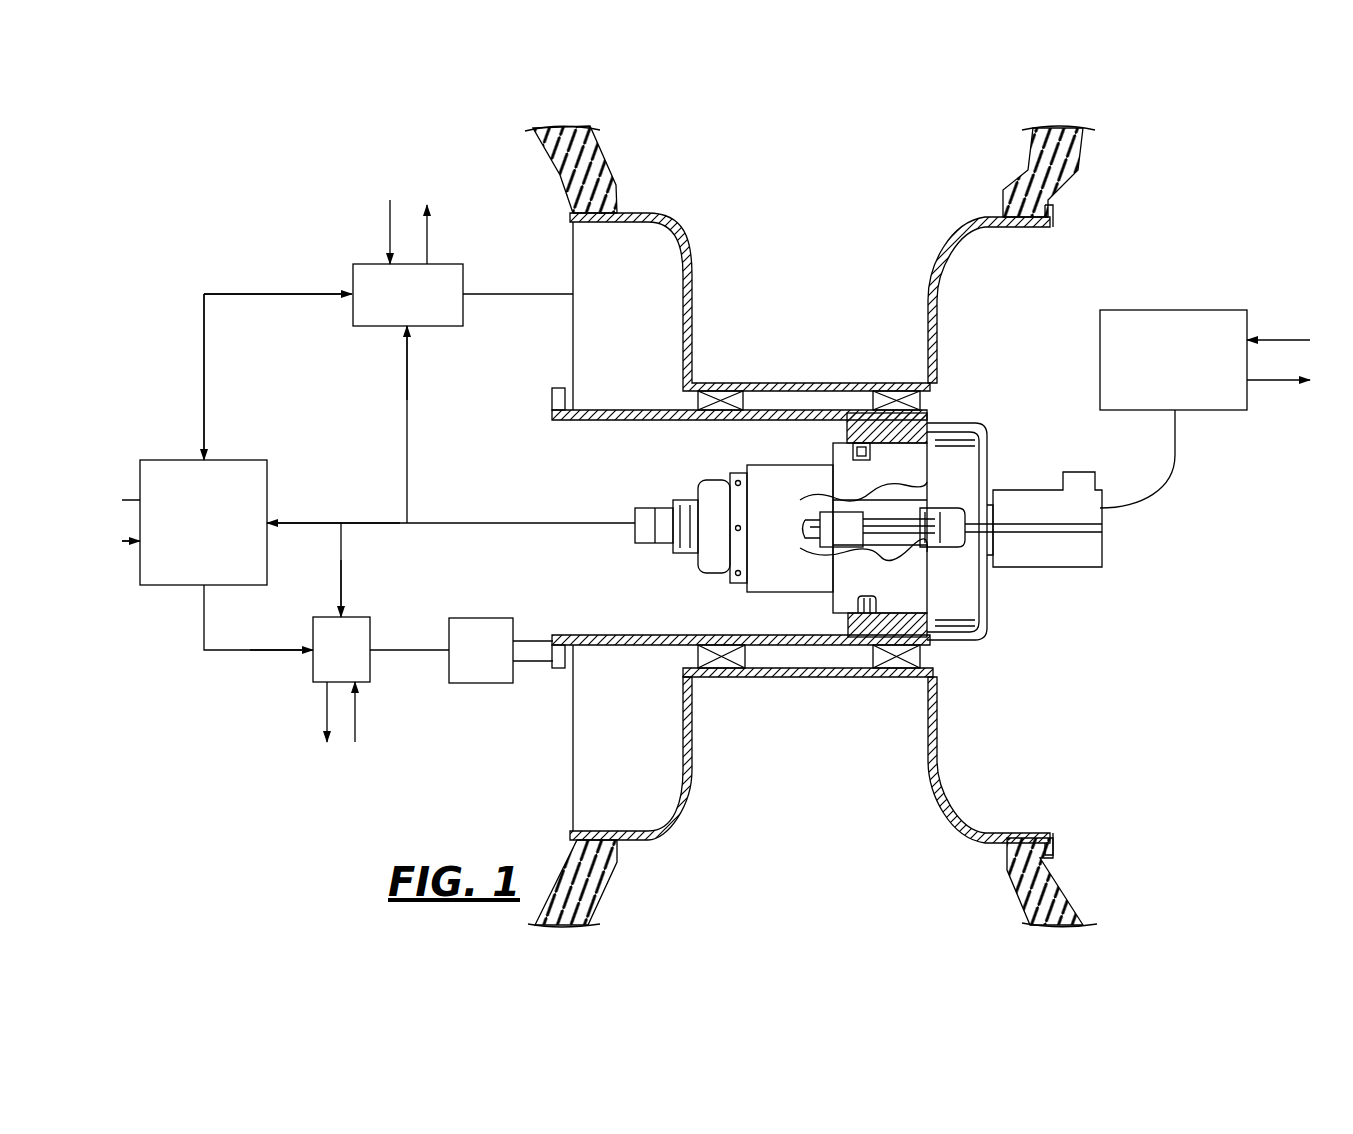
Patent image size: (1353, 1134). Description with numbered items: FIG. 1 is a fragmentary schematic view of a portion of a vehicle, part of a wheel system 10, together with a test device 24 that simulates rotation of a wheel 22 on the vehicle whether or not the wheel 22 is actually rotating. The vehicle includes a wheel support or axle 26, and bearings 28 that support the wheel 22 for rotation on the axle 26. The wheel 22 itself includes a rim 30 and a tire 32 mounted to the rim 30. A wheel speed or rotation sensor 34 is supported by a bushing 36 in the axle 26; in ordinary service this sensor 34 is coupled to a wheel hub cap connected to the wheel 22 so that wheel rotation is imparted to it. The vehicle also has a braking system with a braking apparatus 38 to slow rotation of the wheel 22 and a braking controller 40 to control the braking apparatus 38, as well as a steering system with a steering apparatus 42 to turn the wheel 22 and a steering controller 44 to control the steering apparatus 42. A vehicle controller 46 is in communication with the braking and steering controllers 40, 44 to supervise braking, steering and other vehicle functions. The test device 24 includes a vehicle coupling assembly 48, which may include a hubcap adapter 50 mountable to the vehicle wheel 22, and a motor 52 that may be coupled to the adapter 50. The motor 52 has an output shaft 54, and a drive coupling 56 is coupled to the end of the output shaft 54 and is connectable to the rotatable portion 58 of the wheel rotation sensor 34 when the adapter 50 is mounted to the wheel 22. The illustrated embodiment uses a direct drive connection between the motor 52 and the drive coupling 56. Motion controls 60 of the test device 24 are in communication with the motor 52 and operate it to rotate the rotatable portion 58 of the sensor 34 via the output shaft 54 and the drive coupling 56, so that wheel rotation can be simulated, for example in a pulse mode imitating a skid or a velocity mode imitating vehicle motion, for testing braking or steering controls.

The vehicle wheel system 10 is at (222, 197).
The wheel 22 is at (1085, 196).
The test device 24 is at (1243, 560).
The axle 26 is at (688, 634).
The bearings 28 is at (876, 402).
The rim 30 is at (925, 278).
The tire 32 is at (992, 168).
The wheel rotation sensor 34 is at (715, 462).
The bushing 36 is at (858, 430).
The braking apparatus 38 is at (741, 311).
The braking controller 40 is at (408, 295).
The steering apparatus 42 is at (481, 650).
The steering controller 44 is at (341, 649).
The vehicle controller 46 is at (203, 522).
The vehicle coupling assembly 48 is at (1022, 598).
The hubcap adapter 50 is at (990, 426).
The motor 52 is at (1110, 572).
The output shaft 54 is at (1100, 528).
The drive coupling 56 is at (948, 557).
The rotatable portion 58 is at (900, 553).
The motion controls 60 is at (1205, 409).